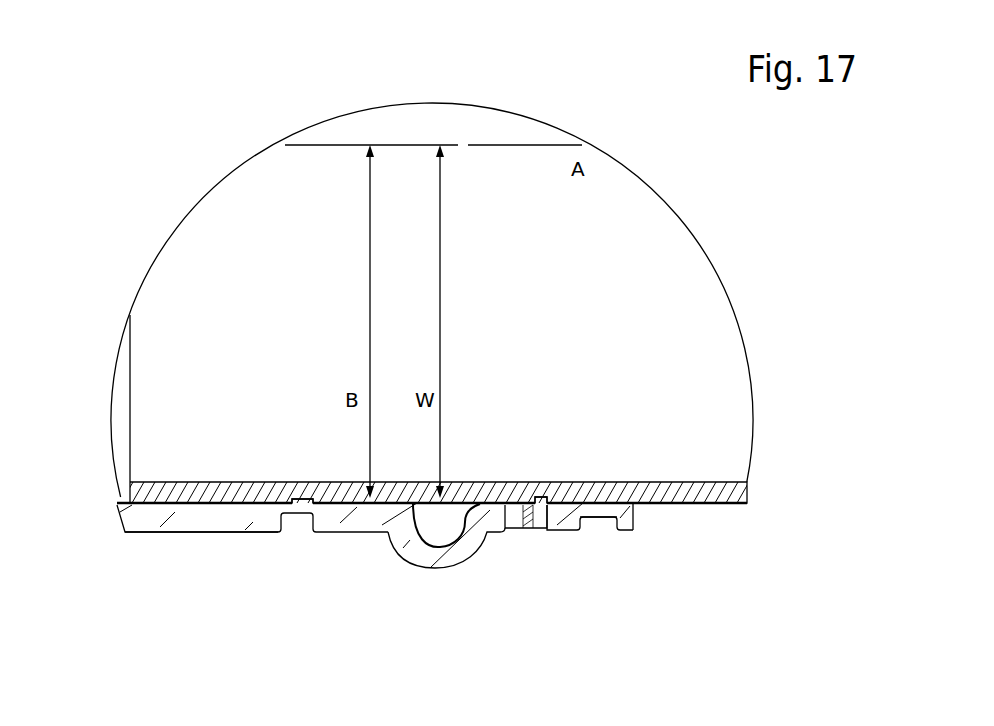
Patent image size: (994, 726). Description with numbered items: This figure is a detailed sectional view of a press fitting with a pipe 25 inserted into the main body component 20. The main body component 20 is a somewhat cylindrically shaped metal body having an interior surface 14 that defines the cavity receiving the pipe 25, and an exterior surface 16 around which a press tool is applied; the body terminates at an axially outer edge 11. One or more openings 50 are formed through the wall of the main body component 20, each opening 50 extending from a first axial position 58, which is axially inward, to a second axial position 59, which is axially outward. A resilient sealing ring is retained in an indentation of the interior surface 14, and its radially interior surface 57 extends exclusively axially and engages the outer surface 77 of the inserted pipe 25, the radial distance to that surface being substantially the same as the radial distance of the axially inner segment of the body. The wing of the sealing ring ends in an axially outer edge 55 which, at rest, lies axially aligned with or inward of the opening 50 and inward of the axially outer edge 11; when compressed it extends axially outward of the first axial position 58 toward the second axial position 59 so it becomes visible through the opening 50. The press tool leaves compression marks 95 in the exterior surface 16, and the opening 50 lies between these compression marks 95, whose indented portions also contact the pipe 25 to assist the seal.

The interior surface 14 is at (121, 500).
The compression marks 95 is at (289, 500).
The radially interior surface 57 is at (461, 500).
The outer edge 55 is at (537, 502).
The pipe 25 is at (746, 492).
The outer surface 77 is at (699, 505).
The axially outer edge 11 is at (632, 526).
The second axial position 59 is at (550, 521).
The opening 50 is at (526, 531).
The first axial position 58 is at (508, 529).
The exterior surface 16 is at (202, 532).
The main body component 20 is at (175, 513).